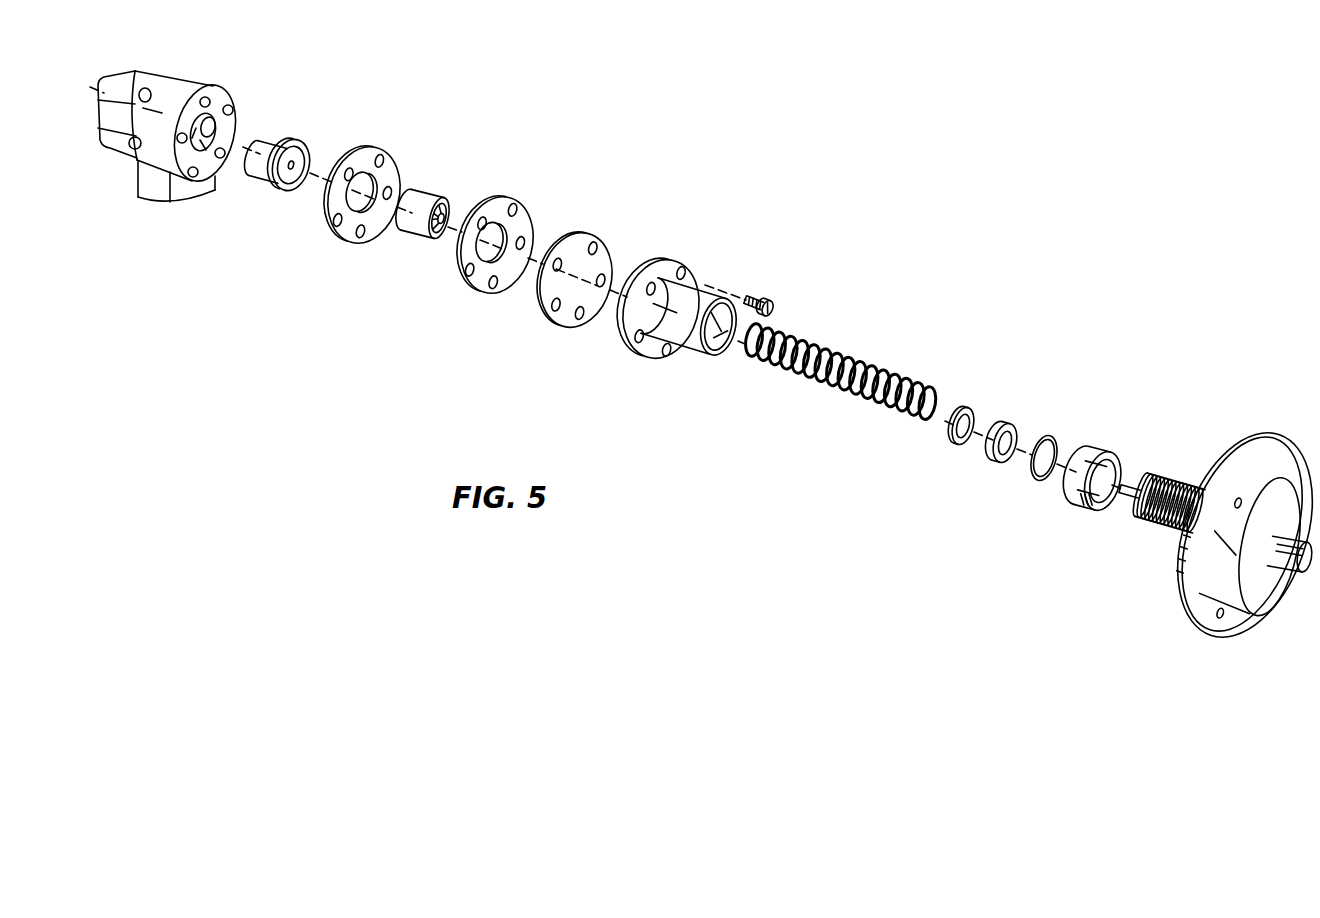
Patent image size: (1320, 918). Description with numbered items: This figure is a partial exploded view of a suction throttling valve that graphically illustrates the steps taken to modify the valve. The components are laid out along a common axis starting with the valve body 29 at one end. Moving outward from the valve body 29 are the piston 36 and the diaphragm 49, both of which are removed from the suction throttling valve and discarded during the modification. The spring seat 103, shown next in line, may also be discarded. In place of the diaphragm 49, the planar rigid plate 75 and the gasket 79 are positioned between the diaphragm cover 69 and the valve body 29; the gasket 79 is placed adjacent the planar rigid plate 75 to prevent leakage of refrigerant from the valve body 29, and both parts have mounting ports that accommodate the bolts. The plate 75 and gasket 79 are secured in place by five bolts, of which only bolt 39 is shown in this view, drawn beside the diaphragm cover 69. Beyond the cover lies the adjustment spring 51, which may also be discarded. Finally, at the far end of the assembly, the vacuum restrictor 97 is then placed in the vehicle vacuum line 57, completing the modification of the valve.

The valve body 29 is at (190, 73).
The piston 36 is at (269, 140).
The diaphragm 49 is at (383, 150).
The spring seat 103 is at (427, 193).
The gasket 79 is at (508, 199).
The planar rigid plate 75 is at (597, 233).
The diaphragm cover 69 is at (712, 283).
The bolt 39 is at (760, 303).
The adjustment spring 51 is at (836, 348).
The vacuum restrictor 97 is at (1297, 573).
The vehicle vacuum line 57 is at (1299, 568).